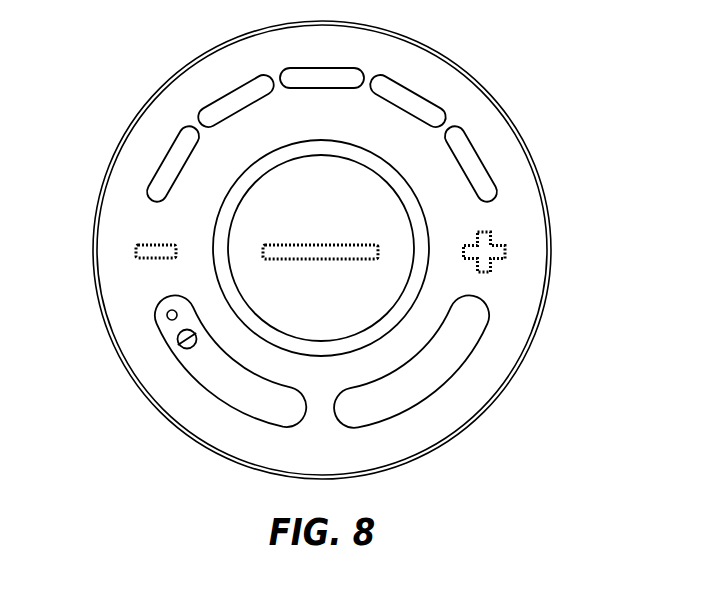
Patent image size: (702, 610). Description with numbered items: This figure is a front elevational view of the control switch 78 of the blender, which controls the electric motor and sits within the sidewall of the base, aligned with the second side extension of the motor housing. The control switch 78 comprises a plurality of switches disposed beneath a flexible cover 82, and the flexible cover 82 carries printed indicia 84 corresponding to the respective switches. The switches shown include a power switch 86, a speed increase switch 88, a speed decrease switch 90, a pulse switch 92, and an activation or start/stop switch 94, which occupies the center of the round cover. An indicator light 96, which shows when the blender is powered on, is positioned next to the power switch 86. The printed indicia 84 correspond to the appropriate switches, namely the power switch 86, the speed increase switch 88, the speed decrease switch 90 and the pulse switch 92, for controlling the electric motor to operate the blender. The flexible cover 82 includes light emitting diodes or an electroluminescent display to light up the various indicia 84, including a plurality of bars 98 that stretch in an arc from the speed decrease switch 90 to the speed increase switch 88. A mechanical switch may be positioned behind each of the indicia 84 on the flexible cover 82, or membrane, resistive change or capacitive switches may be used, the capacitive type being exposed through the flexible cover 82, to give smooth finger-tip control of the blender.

The control switch 78 is at (156, 46).
The flexible cover 82 is at (423, 62).
The indicia 84 is at (440, 386).
The power switch 86 is at (205, 387).
The speed increase switch 88 is at (505, 251).
The speed decrease switch 90 is at (137, 252).
The pulse switch 92 is at (483, 322).
The start/stop switch 94 is at (378, 252).
The indicator light 96 is at (167, 316).
The bars 98 is at (168, 162).